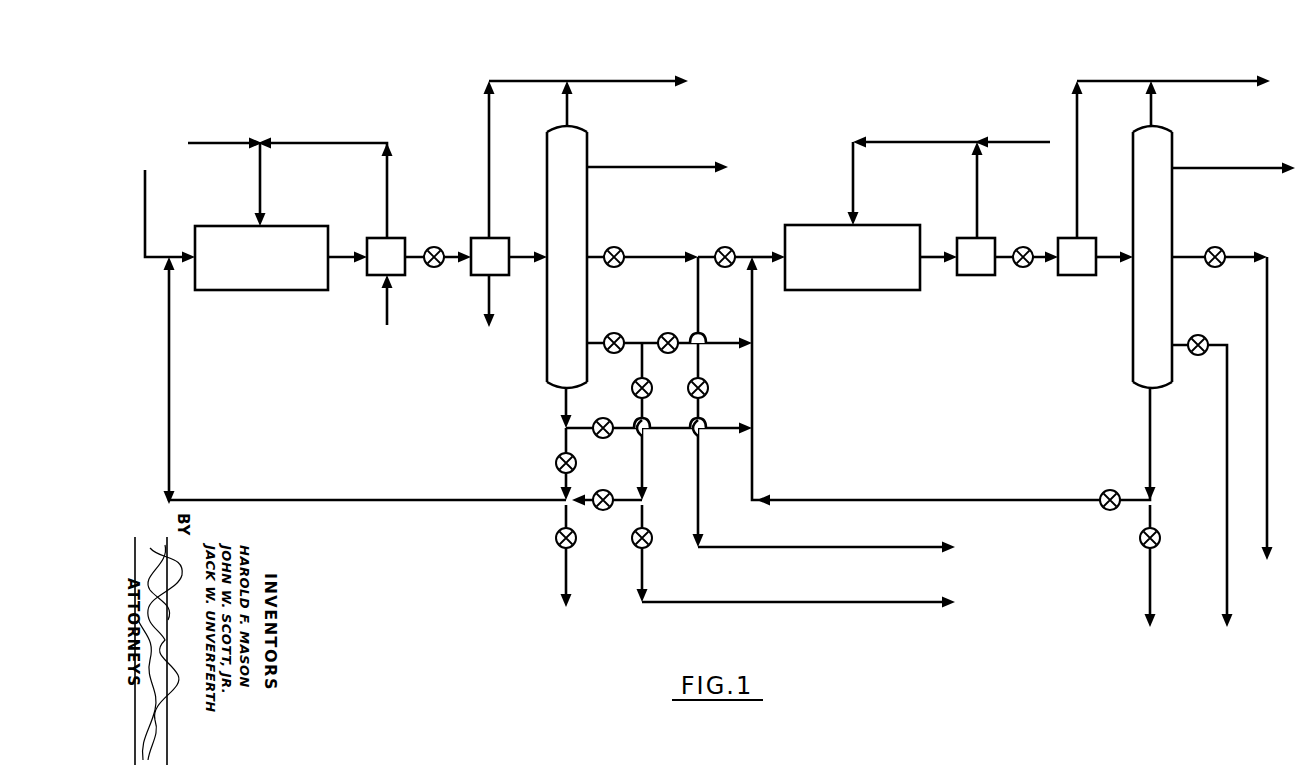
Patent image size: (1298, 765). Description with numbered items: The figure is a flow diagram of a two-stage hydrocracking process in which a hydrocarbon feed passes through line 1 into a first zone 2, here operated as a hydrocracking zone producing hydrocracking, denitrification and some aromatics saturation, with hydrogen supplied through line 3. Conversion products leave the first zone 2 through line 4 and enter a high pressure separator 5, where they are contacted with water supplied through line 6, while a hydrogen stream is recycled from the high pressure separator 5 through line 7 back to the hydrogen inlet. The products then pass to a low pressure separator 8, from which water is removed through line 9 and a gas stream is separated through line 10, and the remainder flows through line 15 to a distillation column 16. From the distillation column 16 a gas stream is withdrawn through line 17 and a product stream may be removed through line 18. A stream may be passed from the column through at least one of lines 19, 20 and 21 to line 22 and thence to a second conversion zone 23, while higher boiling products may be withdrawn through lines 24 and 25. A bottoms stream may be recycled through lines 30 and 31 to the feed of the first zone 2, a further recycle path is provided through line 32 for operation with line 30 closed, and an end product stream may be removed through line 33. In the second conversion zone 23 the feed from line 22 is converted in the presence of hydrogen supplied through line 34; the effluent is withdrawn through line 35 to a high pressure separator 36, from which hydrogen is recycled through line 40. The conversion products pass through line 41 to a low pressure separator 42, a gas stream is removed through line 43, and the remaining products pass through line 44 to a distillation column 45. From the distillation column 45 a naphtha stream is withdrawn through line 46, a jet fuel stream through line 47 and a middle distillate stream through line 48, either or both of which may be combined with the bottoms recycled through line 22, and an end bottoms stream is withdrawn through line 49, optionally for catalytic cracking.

The feed line 1 is at (145, 197).
The first zone 2 is at (283, 290).
The hydrogen supply line 3 is at (260, 178).
The conversion product withdrawal line 4 is at (340, 257).
The high pressure separator 5 is at (400, 238).
The water supply line 6 is at (387, 305).
The hydrogen recycle line 7 is at (318, 143).
The low pressure separator 8 is at (479, 238).
The water removal line 9 is at (489, 305).
The gas line 10 is at (489, 130).
The line to distillation column 15 is at (522, 254).
The distillation column 16 is at (545, 370).
The gas withdrawal line 17 is at (567, 110).
The product line 18 is at (652, 169).
The sidecut line 19 is at (668, 250).
The sidecut line 20 is at (638, 342).
The sidecut line 21 is at (628, 425).
The second zone feed line 22 is at (752, 250).
The second conversion zone 23 is at (845, 290).
The higher boiling product line 24 is at (696, 300).
The higher boiling product line 25 is at (642, 365).
The recycle line 30 is at (561, 440).
The recycle line 31 is at (360, 500).
The recycle line 32 is at (626, 496).
The end product line 33 is at (566, 565).
The hydrogen supply line 34 is at (912, 141).
The effluent line 35 is at (935, 255).
The high pressure separator 36 is at (977, 275).
The hydrogen recycle line 40 is at (977, 178).
The conversion product line 41 is at (1040, 246).
The low pressure separator 42 is at (1080, 275).
The gas removal line 43 is at (1077, 115).
The line to distillation column 44 is at (1112, 255).
The distillation column 45 is at (1132, 335).
The naphtha line 46 is at (1225, 170).
The jet fuel line 47 is at (1267, 312).
The middle distillate line 48 is at (1227, 598).
The end bottoms line 49 is at (1150, 585).